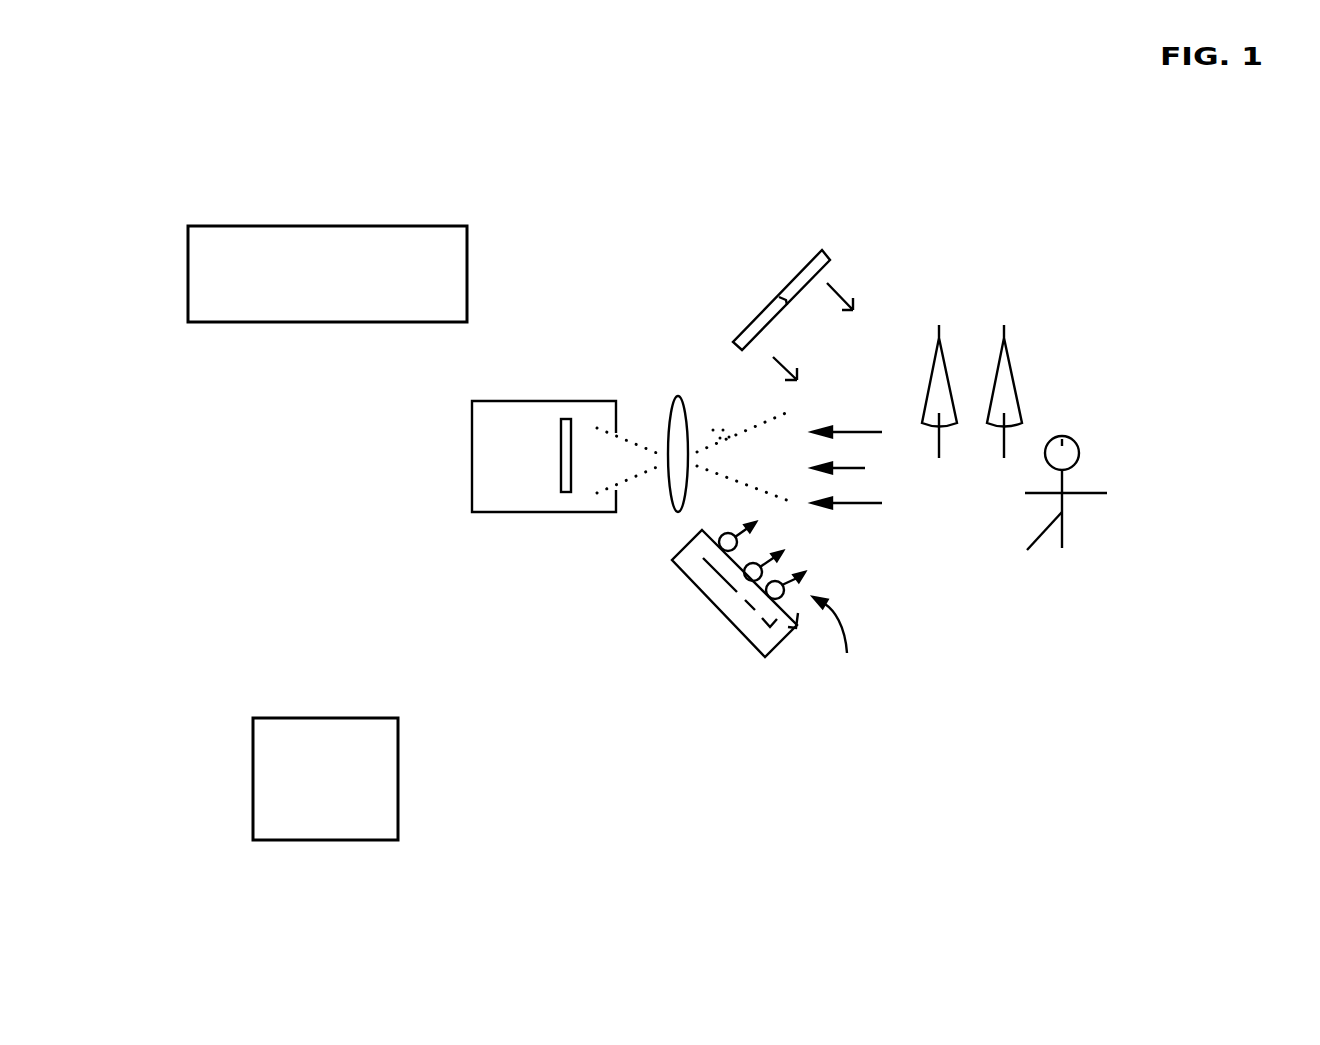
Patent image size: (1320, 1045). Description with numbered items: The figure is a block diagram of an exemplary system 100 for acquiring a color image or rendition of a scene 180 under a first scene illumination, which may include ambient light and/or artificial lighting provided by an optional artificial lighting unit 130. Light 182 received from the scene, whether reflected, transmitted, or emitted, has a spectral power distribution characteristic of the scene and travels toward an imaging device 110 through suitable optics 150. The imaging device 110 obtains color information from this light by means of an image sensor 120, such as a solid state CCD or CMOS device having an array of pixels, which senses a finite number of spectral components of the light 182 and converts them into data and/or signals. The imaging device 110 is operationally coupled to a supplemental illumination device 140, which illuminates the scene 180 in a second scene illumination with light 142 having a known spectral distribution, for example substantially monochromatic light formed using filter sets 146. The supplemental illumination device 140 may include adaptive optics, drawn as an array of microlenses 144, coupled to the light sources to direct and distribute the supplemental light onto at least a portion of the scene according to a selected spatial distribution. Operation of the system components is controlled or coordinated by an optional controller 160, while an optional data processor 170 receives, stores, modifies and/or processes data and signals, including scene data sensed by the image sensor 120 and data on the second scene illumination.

The system 100 is at (631, 938).
The imaging device 110 is at (472, 512).
The image sensor 120 is at (545, 483).
The optional artificial lighting unit 130 is at (825, 248).
The supplemental illumination device 140 is at (743, 668).
The light 142 is at (908, 659).
The microlenses 144 is at (772, 600).
The filter sets 146 is at (703, 558).
The optics 150 is at (677, 395).
The controller 160 is at (348, 804).
The data processor 170 is at (348, 316).
The scene 180 is at (1093, 349).
The light received from the scene 182 is at (899, 528).